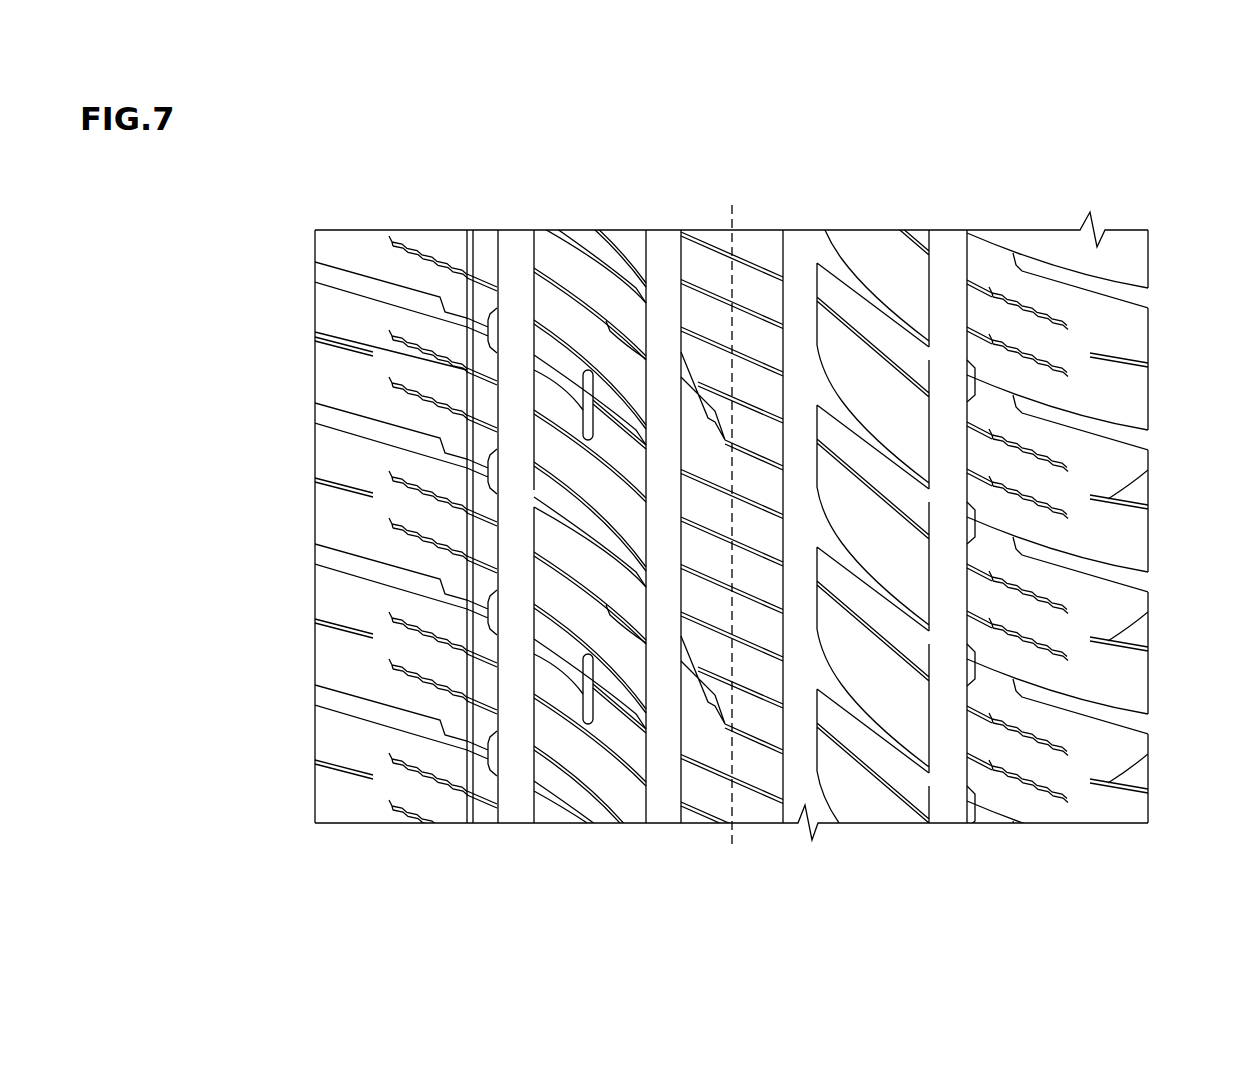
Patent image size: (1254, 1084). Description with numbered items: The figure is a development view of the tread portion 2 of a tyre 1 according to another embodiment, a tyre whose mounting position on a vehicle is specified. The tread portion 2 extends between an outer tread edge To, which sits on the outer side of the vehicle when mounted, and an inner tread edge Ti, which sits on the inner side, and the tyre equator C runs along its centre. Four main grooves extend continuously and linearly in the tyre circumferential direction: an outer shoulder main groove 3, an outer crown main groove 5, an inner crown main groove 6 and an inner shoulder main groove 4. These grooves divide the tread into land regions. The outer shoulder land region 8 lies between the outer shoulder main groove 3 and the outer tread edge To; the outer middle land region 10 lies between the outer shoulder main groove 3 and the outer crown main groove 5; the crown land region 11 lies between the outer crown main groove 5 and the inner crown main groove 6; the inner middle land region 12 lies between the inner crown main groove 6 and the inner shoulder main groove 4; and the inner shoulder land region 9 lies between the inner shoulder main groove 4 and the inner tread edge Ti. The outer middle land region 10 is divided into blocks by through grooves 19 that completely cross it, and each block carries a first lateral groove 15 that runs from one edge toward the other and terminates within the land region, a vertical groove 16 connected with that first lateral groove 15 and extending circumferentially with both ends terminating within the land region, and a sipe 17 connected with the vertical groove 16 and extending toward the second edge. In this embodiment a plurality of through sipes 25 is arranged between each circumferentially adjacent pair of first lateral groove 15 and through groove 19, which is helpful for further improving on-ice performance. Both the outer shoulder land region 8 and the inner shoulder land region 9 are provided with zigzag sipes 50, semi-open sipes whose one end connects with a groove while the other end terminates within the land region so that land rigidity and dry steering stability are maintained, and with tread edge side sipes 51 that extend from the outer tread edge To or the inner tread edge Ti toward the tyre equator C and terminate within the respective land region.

The tyre 1 is at (847, 224).
The tread portion 2 is at (635, 224).
The outer shoulder main groove 3 is at (513, 264).
The inner shoulder main groove 4 is at (948, 271).
The outer crown main groove 5 is at (660, 264).
The inner crown main groove 6 is at (798, 275).
The outer shoulder land region 8 is at (379, 262).
The inner shoulder land region 9 is at (1039, 294).
The outer middle land region 10 is at (581, 277).
The crown land region 11 is at (751, 292).
The inner middle land region 12 is at (871, 277).
The first lateral groove 15 is at (315, 339).
The vertical groove 16 is at (576, 428).
The sipe 17 is at (630, 410).
The through groove 19 is at (585, 539).
The through sipe 25 is at (648, 688).
The zigzag sipe 50 is at (548, 383).
The tread edge side sipe 51 is at (350, 488).
The tyre equator C is at (729, 514).
The outer tread edge To is at (315, 250).
The inner tread edge Ti is at (1148, 247).